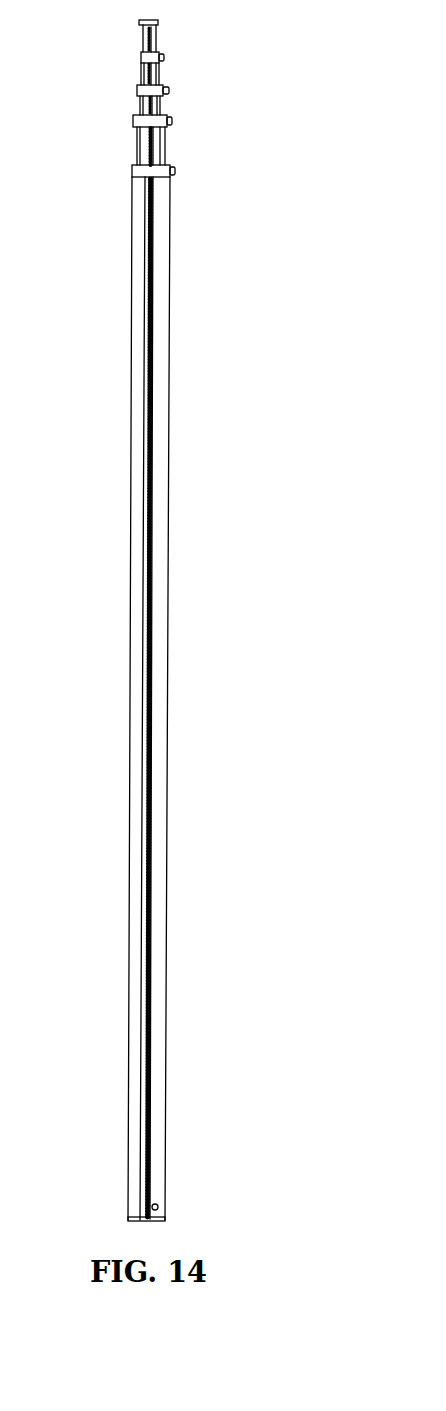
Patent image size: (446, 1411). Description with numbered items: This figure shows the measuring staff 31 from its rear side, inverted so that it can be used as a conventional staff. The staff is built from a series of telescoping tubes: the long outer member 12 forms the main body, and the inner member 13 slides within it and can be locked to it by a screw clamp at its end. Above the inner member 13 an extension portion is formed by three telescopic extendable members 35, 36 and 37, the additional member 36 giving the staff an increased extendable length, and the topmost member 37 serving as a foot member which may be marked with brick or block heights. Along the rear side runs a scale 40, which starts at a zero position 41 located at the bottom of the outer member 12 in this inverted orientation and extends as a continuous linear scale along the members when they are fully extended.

The outer member 12 is at (135, 705).
The inner member 13 is at (167, 148).
The measuring staff 31 is at (178, 626).
The telescopic extendable member 35 is at (163, 106).
The telescopic extendable member 36 is at (142, 68).
The foot member 37 is at (145, 32).
The scale 40 is at (166, 610).
The zero position 41 is at (110, 1217).